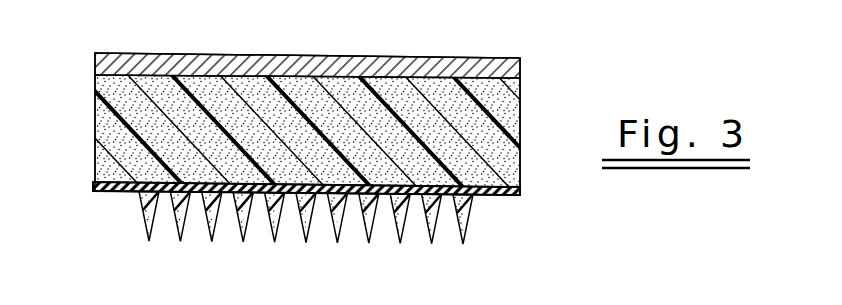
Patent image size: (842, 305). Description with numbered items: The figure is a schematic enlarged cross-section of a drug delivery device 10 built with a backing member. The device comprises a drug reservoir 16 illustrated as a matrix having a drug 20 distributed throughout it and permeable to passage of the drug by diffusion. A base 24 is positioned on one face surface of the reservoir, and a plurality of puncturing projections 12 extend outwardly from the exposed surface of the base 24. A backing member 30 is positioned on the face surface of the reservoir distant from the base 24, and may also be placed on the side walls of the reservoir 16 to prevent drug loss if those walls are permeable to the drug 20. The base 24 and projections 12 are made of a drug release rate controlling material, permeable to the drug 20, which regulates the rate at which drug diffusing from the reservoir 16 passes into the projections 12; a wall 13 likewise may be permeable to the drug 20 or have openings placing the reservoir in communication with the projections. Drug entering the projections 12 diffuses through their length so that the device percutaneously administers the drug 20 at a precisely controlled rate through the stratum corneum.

The drug delivery device 10 is at (534, 104).
The puncturing projections 12 is at (150, 224).
The wall 13 is at (385, 198).
The drug reservoir 16 is at (95, 121).
The drug 20 is at (312, 100).
The base 24 is at (137, 194).
The backing member 30 is at (95, 65).